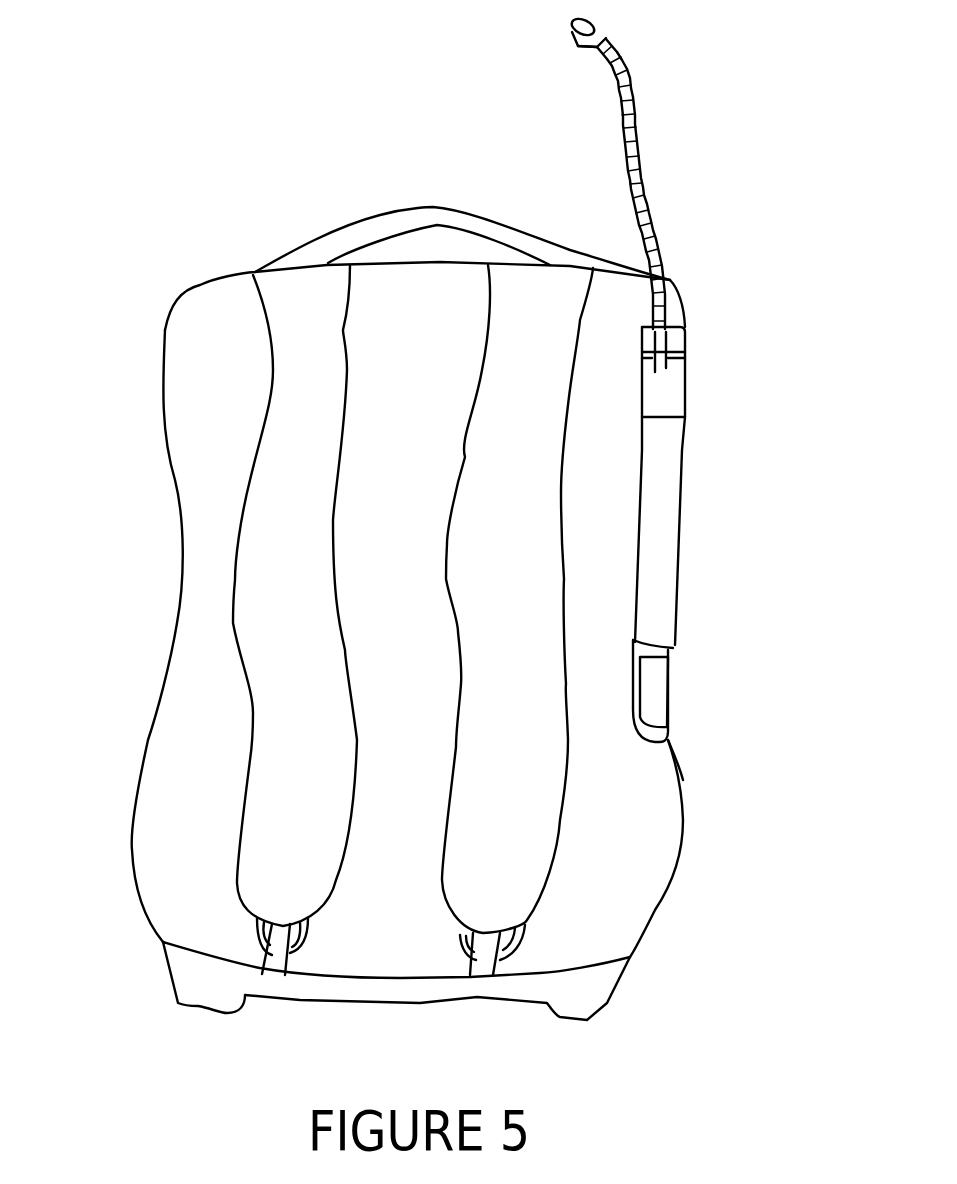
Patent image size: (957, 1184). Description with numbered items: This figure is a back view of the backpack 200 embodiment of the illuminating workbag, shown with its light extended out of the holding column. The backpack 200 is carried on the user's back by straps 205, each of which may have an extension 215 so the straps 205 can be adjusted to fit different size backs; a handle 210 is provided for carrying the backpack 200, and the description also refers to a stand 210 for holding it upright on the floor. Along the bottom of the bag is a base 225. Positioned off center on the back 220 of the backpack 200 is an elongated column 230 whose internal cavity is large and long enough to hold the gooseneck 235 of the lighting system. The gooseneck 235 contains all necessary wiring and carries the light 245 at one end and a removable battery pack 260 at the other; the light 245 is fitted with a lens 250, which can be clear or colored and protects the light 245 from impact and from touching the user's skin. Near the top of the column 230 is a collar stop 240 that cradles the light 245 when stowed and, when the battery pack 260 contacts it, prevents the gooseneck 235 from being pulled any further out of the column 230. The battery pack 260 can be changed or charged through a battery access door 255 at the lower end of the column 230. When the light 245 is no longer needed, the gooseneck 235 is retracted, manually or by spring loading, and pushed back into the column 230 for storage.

The backpack 200 is at (210, 203).
The straps 205 is at (260, 670).
The handle 210 is at (390, 228).
The extension 215 is at (482, 958).
The back 220 is at (208, 347).
The base 225 is at (593, 995).
The elongated column 230 is at (675, 520).
The gooseneck 235 is at (652, 220).
The collar stop 240 is at (685, 352).
The light 245 is at (582, 40).
The lens 250 is at (573, 25).
The battery access door 255 is at (693, 670).
The battery pack 260 is at (675, 390).